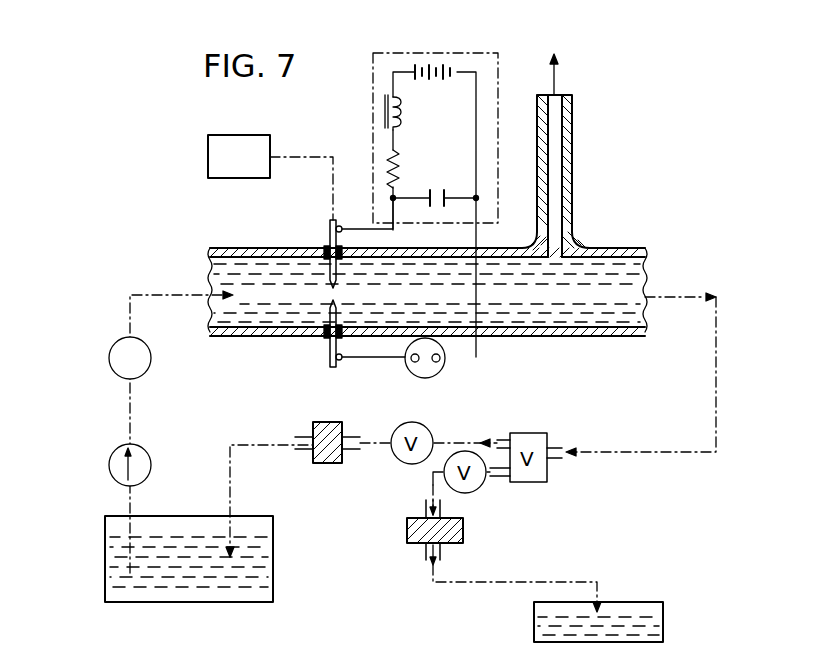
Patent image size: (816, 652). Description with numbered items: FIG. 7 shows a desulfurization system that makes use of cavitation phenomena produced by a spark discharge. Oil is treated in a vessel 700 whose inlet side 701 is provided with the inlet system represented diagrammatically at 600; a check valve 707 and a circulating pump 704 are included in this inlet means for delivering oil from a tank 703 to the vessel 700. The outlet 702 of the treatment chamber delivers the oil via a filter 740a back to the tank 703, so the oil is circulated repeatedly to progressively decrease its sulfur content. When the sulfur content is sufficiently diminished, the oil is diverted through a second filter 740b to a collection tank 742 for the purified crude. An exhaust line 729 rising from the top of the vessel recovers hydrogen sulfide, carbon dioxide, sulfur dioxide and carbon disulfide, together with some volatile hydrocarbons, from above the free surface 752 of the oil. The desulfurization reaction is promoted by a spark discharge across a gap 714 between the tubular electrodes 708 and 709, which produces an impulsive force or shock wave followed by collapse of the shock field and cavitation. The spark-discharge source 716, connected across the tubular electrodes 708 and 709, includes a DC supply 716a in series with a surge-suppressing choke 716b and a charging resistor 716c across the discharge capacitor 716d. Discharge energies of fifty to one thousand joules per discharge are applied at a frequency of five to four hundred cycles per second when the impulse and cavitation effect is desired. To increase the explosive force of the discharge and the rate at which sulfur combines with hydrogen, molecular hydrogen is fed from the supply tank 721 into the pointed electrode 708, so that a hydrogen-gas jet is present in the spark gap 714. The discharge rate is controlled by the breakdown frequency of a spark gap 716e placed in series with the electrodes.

The inlet system 600 is at (130, 312).
The vessel 700 is at (430, 302).
The inlet side 701 is at (218, 255).
The outlet 702 is at (648, 327).
The tank 703 is at (276, 585).
The circulating pump 704 is at (108, 465).
The check valve 707 is at (150, 370).
The tubular electrode 708 is at (340, 268).
The tubular electrode 709 is at (330, 350).
The gap 714 is at (333, 296).
The spark-discharge source 716 is at (467, 207).
The DC supply 716a is at (445, 65).
The surge-suppressing choke 716b is at (402, 113).
The charging resistor 716c is at (404, 168).
The discharge capacitor 716d is at (437, 208).
The spark gap 716e is at (428, 362).
The supply tank 721 is at (265, 140).
The exhaust line 729 is at (573, 179).
The filter 740a is at (335, 464).
The filter 740b is at (408, 544).
The collection tank 742 is at (666, 620).
The free surface 752 is at (566, 236).